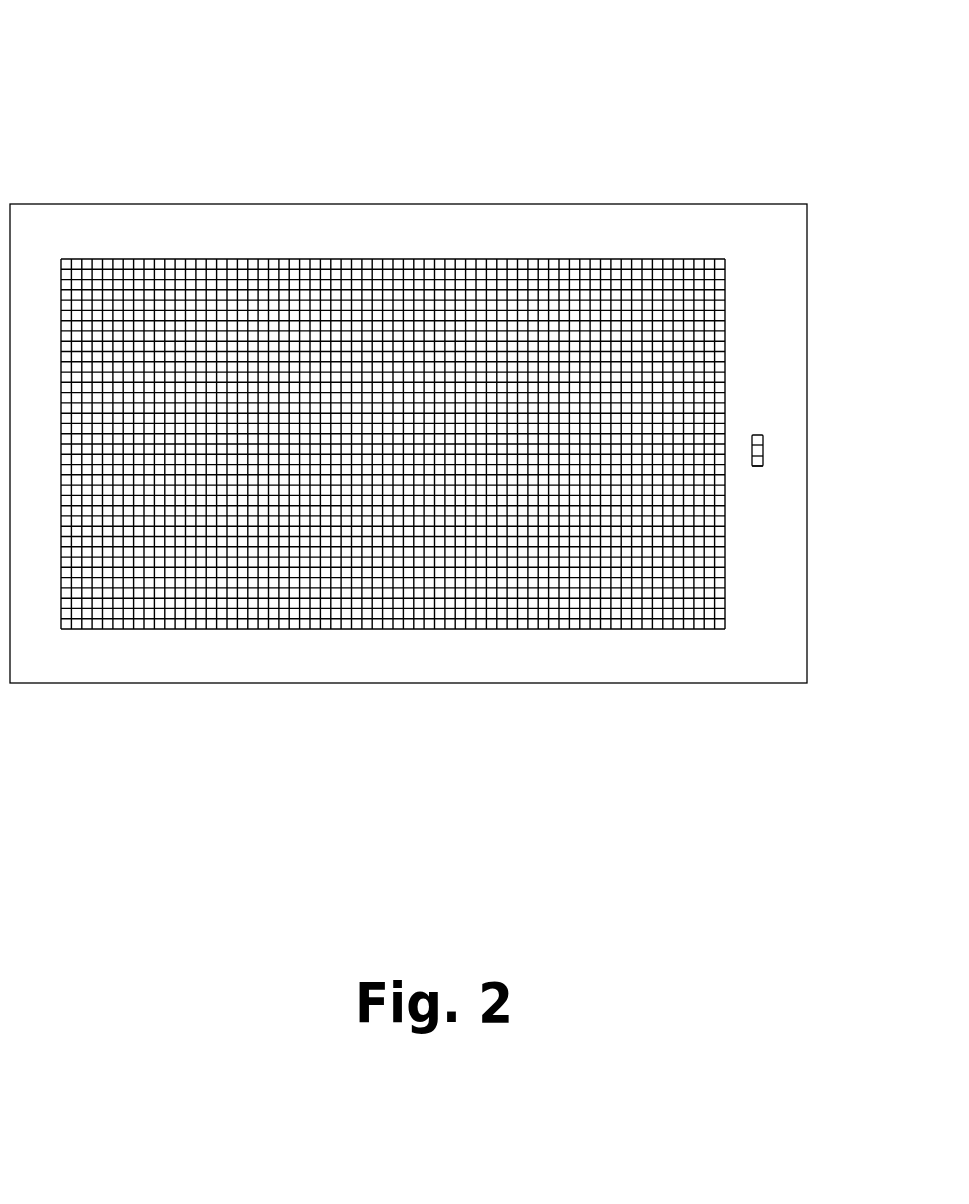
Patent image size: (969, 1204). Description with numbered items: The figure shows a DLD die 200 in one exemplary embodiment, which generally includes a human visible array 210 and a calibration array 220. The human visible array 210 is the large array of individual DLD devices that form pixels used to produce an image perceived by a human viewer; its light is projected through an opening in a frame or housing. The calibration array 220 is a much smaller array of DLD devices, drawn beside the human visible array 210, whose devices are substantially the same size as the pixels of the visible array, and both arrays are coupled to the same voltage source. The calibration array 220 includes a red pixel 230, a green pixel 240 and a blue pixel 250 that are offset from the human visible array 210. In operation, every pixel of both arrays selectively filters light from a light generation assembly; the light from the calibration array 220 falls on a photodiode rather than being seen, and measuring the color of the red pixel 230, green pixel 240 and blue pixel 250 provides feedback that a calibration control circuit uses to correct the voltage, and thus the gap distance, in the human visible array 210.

The DLD die 200 is at (236, 98).
The human visible array 210 is at (340, 642).
The calibration array 220 is at (789, 440).
The red pixel 230 is at (753, 435).
The green pixel 240 is at (763, 447).
The blue pixel 250 is at (757, 466).